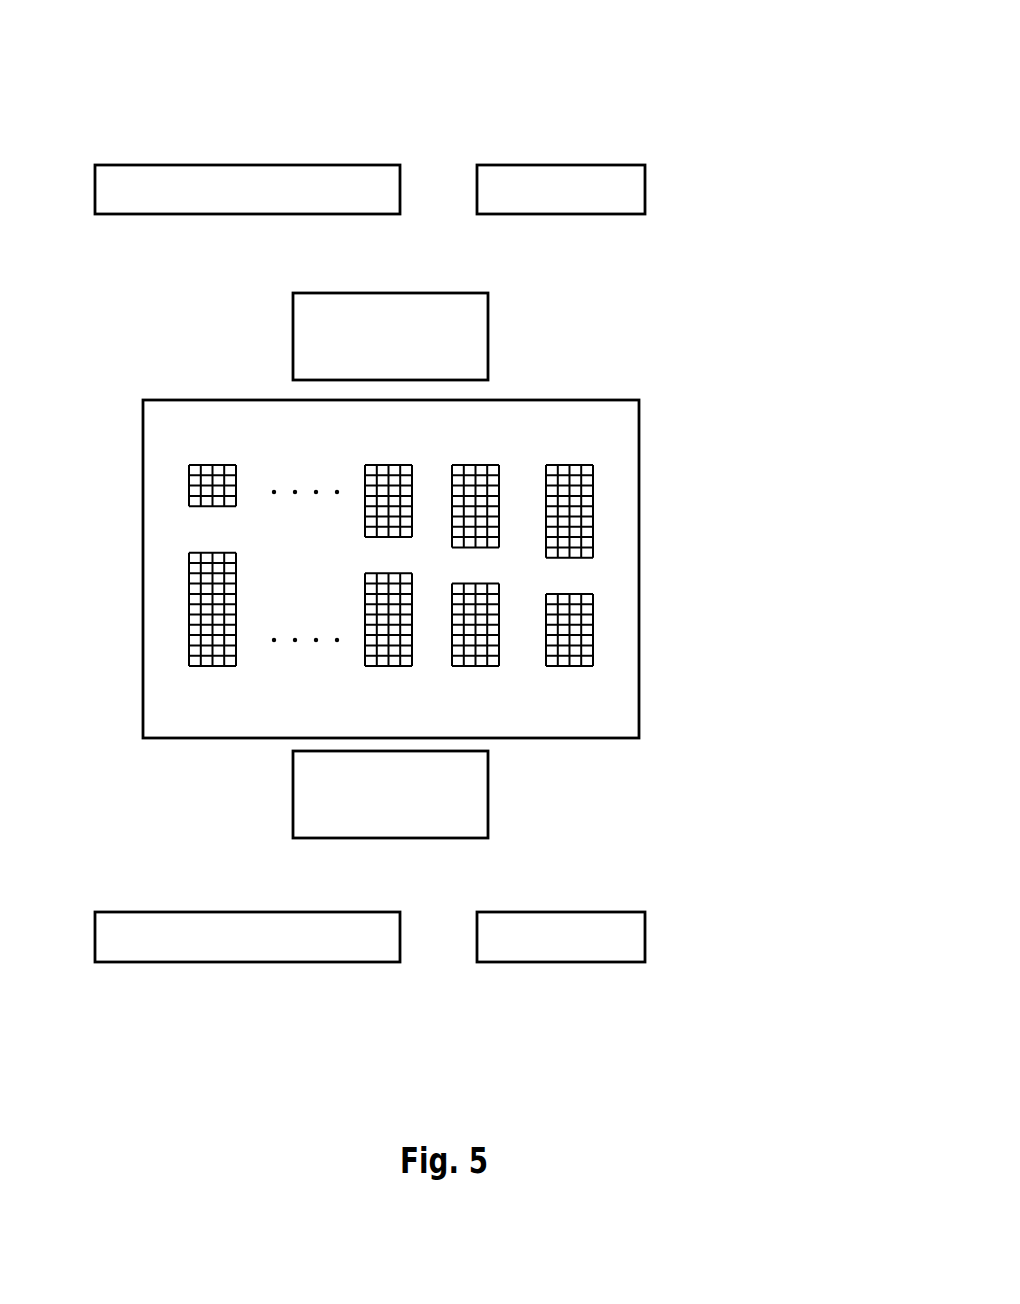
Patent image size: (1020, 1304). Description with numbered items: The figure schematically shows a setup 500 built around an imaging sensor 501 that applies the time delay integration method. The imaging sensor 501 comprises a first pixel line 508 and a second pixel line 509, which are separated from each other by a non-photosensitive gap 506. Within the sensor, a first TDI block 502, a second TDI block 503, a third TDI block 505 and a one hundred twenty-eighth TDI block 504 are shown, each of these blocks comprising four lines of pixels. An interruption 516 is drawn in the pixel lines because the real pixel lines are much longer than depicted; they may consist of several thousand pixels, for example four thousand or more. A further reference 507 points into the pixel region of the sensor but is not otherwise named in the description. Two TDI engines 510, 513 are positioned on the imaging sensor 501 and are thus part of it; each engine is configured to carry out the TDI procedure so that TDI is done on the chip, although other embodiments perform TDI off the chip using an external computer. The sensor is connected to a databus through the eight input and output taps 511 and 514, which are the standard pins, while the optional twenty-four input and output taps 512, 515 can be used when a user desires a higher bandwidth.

The setup 500 is at (732, 116).
The imaging sensor 501 is at (628, 398).
The first TDI block 502 is at (578, 668).
The second TDI block 503 is at (495, 675).
The 128th TDI block 504 is at (203, 667).
The third TDI block 505 is at (387, 666).
The non-photosensitive gap 506 is at (517, 492).
The top tap segment 507 is at (430, 480).
The first pixel line 508 is at (555, 463).
The second pixel line 509 is at (495, 457).
The TDI engine 510 is at (293, 305).
The eight input and output taps 511 is at (560, 164).
The 24 input and output taps 512 is at (297, 165).
The TDI engine 513 is at (488, 817).
The eight input and output taps 514 is at (580, 963).
The 24 input and output taps 515 is at (277, 963).
The interruption 516 is at (593, 575).